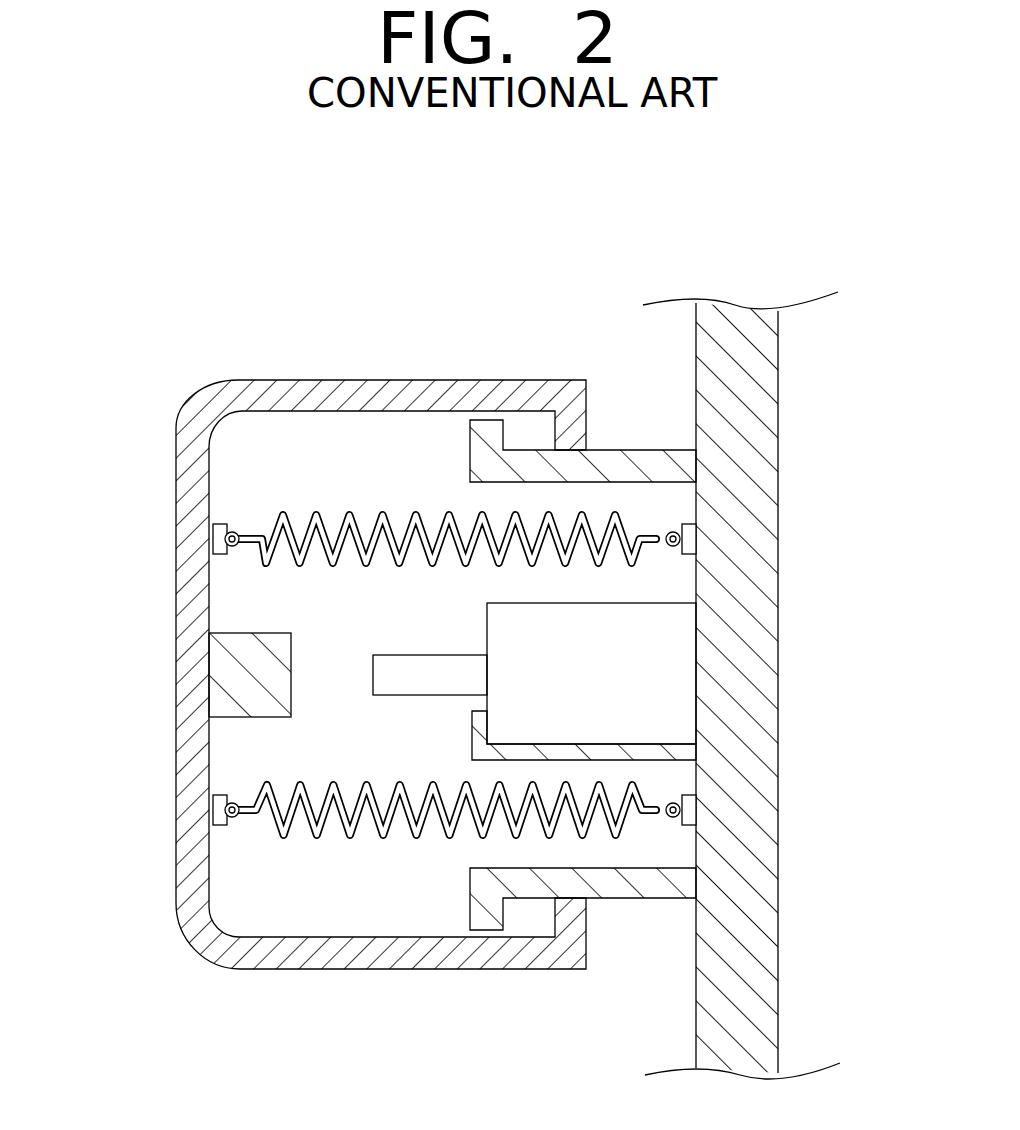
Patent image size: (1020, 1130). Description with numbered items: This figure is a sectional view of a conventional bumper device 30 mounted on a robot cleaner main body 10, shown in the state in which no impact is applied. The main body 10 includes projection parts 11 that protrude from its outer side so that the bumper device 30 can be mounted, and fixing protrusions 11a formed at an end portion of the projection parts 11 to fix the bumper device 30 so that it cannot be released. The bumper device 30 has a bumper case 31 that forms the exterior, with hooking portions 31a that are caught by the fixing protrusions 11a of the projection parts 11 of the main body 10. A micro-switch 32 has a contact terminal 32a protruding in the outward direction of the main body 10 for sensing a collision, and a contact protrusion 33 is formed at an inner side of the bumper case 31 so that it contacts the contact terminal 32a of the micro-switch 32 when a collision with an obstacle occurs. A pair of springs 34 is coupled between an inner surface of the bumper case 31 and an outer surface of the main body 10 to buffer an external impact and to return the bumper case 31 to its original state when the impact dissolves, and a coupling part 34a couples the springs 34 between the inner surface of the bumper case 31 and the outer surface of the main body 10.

The robot cleaner main body 10 is at (743, 569).
The projection part 11 is at (636, 452).
The fixing protrusion 11a is at (486, 418).
The bumper device 30 is at (151, 358).
The bumper case 31 is at (197, 746).
The hooking portion 31a is at (577, 432).
The micro-switch 32 is at (637, 693).
The contact terminal 32a is at (413, 667).
The contact protrusion 33 is at (228, 675).
The spring 34 is at (278, 830).
The coupling part 34a is at (212, 812).